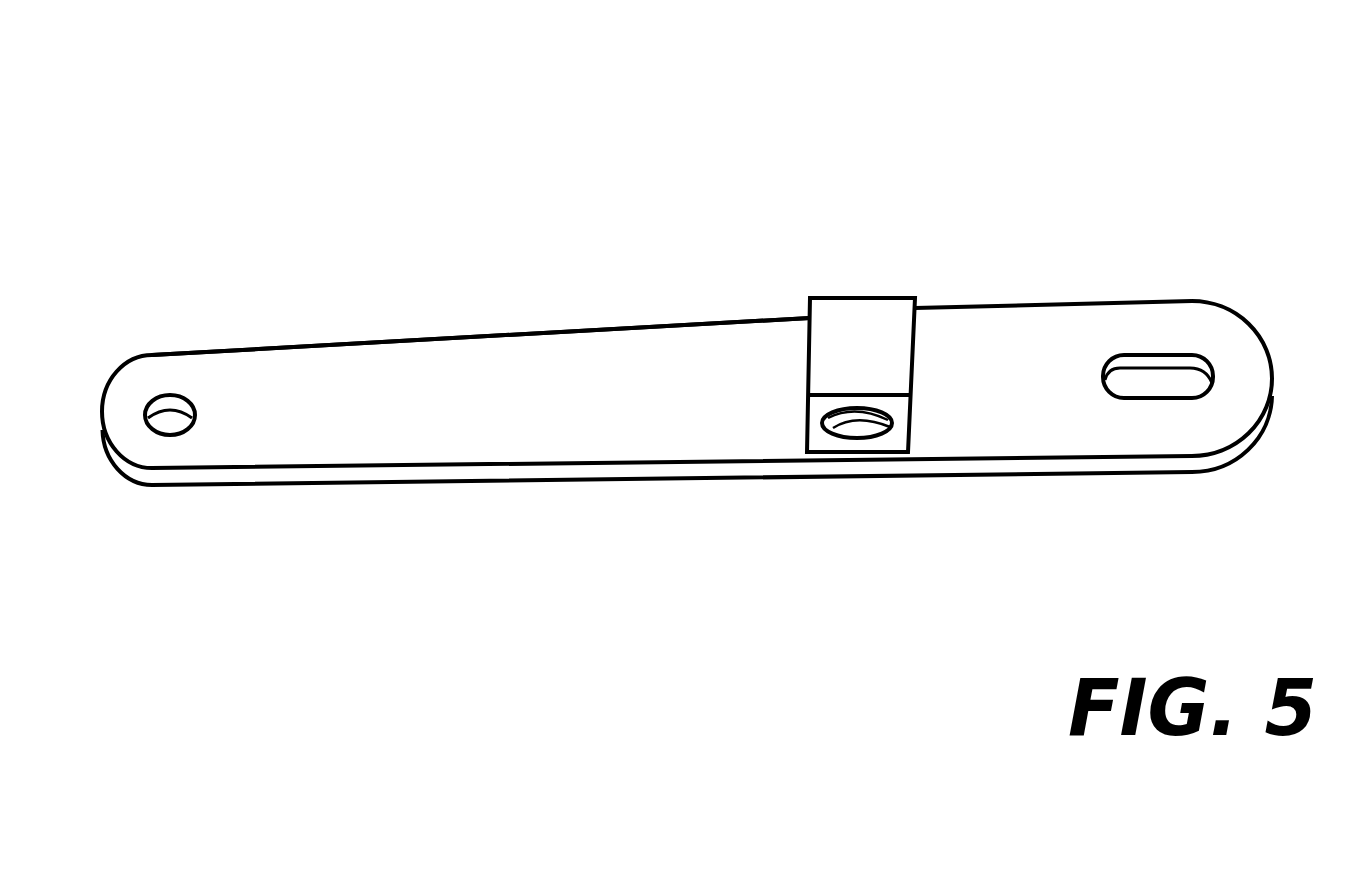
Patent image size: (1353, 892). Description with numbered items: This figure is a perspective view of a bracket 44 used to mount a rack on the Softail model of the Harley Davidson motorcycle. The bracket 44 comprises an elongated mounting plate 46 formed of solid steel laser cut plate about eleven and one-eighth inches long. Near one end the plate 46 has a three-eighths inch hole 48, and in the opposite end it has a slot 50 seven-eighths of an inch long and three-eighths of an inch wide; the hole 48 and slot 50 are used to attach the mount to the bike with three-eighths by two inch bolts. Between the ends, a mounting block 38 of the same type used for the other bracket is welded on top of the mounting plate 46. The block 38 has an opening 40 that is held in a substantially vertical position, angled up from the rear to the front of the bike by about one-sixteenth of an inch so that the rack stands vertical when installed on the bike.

The mounting block 38 is at (848, 328).
The opening 40 is at (856, 440).
The bracket 44 is at (463, 317).
The elongated mounting plate 46 is at (320, 347).
The hole 48 is at (165, 395).
The slot 50 is at (1155, 355).